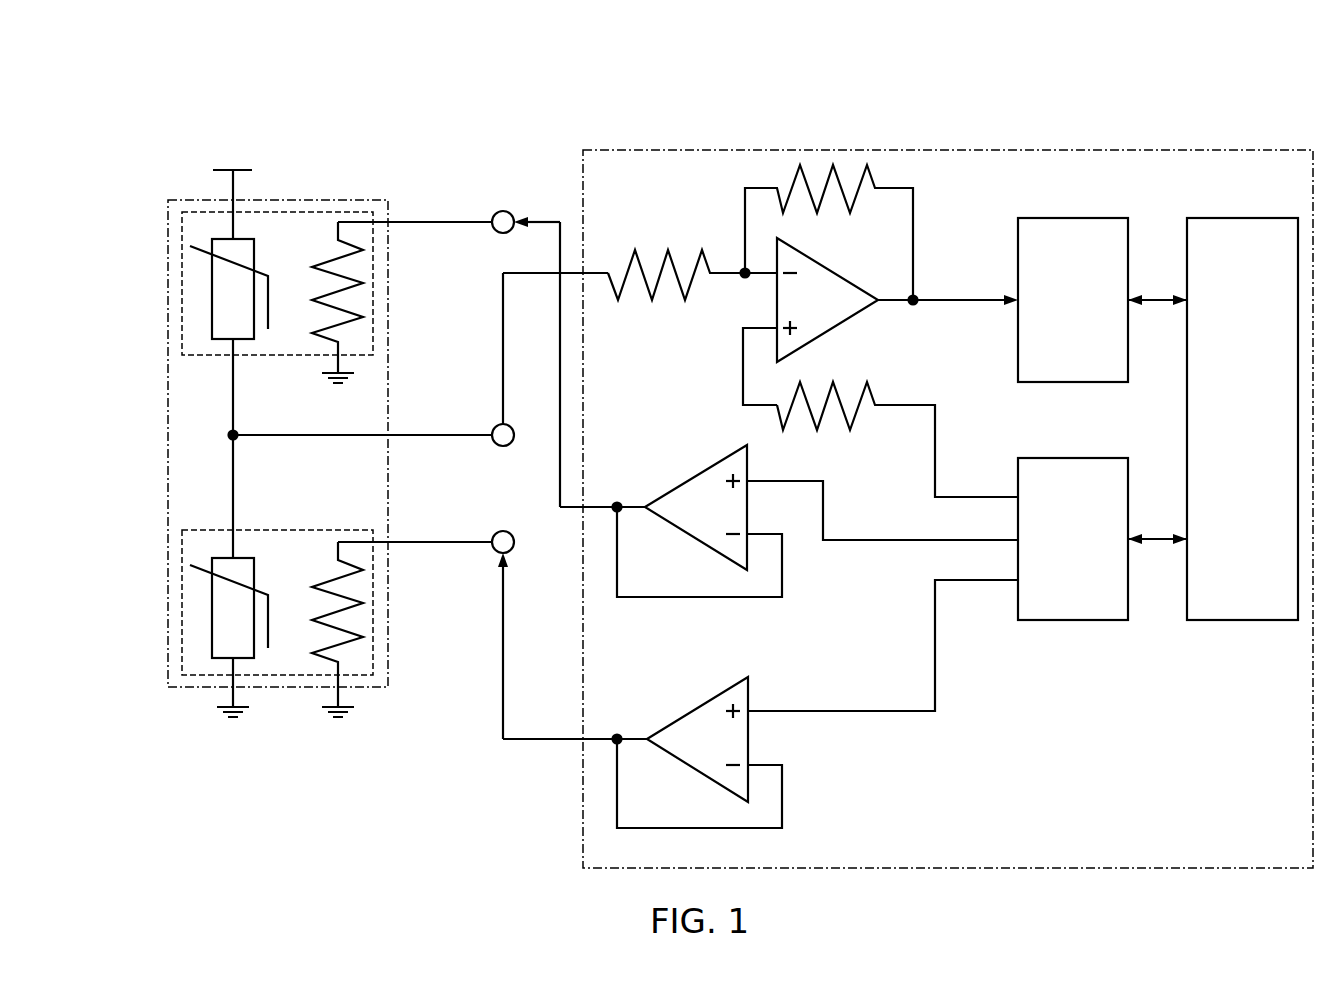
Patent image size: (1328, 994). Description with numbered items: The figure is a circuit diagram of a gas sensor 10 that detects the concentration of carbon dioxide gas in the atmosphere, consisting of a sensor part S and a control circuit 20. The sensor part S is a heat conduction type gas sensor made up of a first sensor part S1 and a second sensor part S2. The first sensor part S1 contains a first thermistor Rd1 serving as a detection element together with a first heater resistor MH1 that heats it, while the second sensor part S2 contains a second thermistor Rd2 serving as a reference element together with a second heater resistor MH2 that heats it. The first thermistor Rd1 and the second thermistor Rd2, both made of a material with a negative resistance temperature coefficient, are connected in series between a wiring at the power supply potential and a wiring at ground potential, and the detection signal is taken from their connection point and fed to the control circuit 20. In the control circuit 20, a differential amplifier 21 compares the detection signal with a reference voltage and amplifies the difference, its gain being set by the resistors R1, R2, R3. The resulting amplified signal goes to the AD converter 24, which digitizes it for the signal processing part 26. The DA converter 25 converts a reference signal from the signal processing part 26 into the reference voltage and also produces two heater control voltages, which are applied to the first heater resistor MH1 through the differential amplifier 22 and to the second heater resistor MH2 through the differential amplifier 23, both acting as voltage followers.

The gas sensor 10 is at (703, 442).
The control circuit 20 is at (1197, 150).
The differential amplifier 21 is at (833, 272).
The differential amplifier 22 is at (695, 477).
The differential amplifier 23 is at (697, 708).
The AD converter 24 is at (1075, 218).
The DA converter 25 is at (1075, 458).
The signal processing part 26 is at (1248, 218).
The resistor R1 is at (868, 394).
The resistor R2 is at (658, 266).
The resistor R3 is at (808, 186).
The first thermistor Rd1 is at (212, 282).
The second thermistor Rd2 is at (243, 558).
The first heater resistor MH1 is at (345, 292).
The second heater resistor MH2 is at (345, 610).
The sensor part S is at (355, 200).
The first sensor part S1 is at (182, 326).
The second sensor part S2 is at (203, 676).